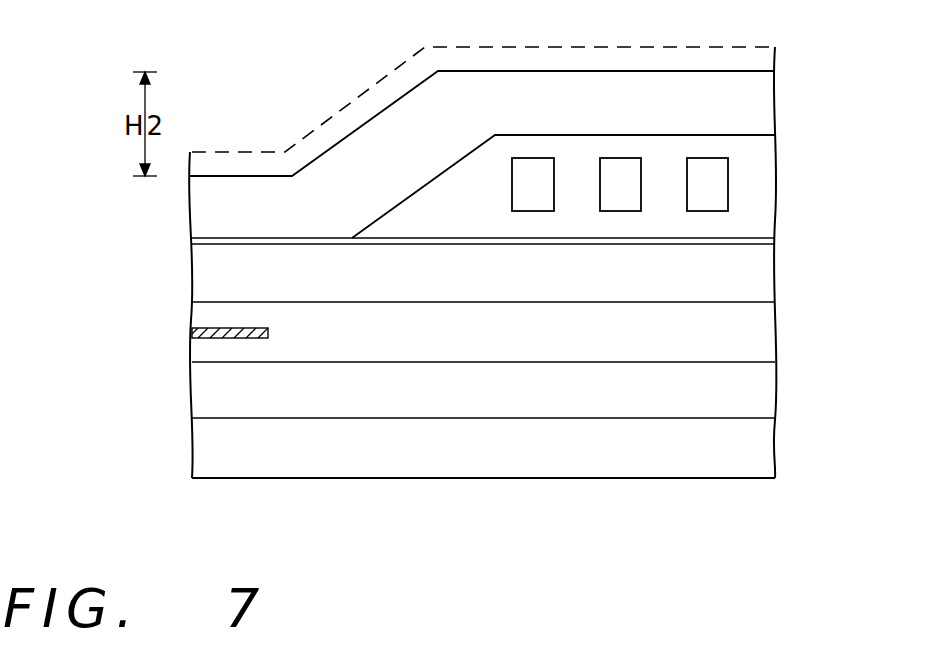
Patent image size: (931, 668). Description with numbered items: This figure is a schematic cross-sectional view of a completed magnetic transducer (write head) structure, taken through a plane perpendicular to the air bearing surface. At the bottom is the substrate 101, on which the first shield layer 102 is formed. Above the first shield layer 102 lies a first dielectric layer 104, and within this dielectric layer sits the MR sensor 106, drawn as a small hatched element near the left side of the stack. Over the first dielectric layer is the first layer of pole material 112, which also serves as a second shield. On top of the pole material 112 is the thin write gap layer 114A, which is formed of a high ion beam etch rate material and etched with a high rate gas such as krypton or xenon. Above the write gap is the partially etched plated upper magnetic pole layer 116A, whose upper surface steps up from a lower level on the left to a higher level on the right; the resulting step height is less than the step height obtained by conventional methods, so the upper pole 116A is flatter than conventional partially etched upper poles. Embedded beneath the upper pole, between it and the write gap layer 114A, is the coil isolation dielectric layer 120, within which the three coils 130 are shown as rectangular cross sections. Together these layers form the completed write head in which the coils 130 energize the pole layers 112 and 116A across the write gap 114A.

The substrate 101 is at (215, 450).
The first shield layer 102 is at (215, 392).
The insulating layer 104 is at (212, 352).
The MR sensor 106 is at (207, 337).
The first layer of pole material 112 is at (218, 281).
The partially etched write gap layer 114A is at (205, 243).
The partially etched plated upper magnetic pole layer 116A is at (203, 204).
The coil isolation dielectric layer 120 is at (763, 203).
The coils 130 is at (531, 170).